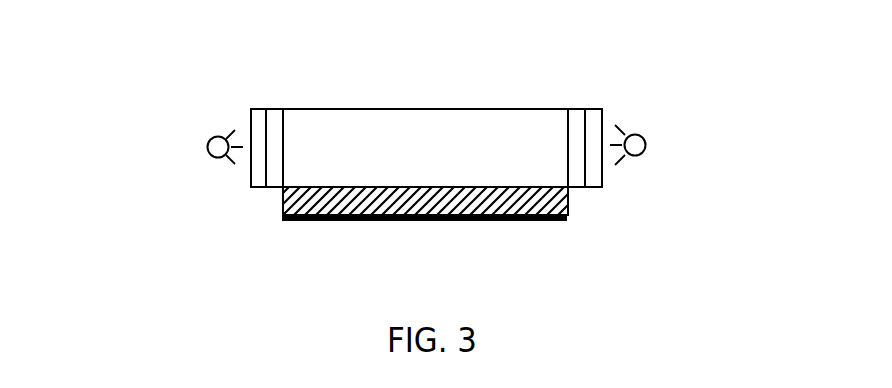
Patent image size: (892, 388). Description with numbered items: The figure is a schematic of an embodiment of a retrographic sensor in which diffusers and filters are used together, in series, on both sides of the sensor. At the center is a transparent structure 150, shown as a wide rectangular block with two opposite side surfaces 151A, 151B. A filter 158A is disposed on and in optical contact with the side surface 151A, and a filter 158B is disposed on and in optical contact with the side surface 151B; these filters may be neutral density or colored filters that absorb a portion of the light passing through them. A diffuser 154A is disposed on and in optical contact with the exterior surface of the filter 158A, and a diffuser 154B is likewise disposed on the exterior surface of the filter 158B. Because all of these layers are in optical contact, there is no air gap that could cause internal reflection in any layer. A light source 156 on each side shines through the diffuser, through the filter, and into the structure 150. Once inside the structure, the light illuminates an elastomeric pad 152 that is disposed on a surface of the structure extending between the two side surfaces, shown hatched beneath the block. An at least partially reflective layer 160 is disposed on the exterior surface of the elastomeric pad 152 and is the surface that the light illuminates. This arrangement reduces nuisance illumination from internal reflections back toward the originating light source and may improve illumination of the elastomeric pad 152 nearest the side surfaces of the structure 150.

The transparent structure 150 is at (446, 126).
The side surface 151A is at (280, 148).
The side surface 151B is at (570, 147).
The filter 158A is at (277, 118).
The filter 158B is at (576, 122).
The diffuser 154A is at (252, 188).
The diffuser 154B is at (596, 188).
The elastomeric pad 152 is at (282, 197).
The at least partially reflective layer 160 is at (493, 221).
The light source 156 is at (207, 147).